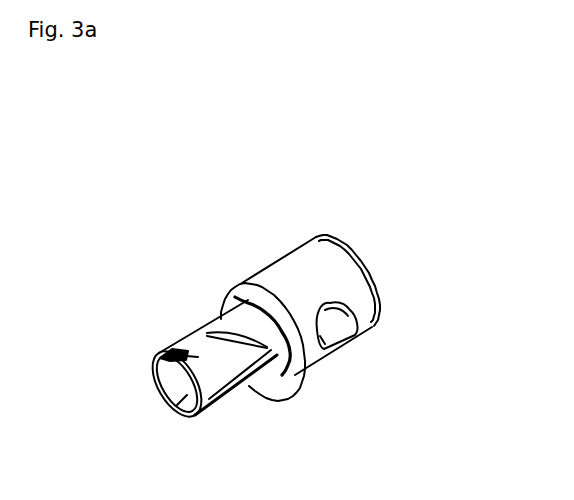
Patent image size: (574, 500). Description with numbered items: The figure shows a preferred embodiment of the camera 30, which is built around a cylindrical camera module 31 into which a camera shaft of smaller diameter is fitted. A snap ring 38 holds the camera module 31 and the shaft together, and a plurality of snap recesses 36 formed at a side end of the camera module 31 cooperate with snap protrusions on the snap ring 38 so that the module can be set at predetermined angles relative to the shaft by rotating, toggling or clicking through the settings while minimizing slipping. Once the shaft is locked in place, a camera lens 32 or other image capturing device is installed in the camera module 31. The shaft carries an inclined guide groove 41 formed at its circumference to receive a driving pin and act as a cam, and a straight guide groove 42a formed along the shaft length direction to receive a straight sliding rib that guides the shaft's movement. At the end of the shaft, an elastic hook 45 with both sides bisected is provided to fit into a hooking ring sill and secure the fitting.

The camera 30 is at (412, 205).
The camera module 31 is at (355, 283).
The camera lens 32 is at (355, 333).
The snap recesses 36 is at (249, 297).
The snap ring 38 is at (246, 294).
The inclined guide groove 41 is at (226, 331).
The straight guide groove 42a is at (240, 384).
The hook 45 is at (178, 349).